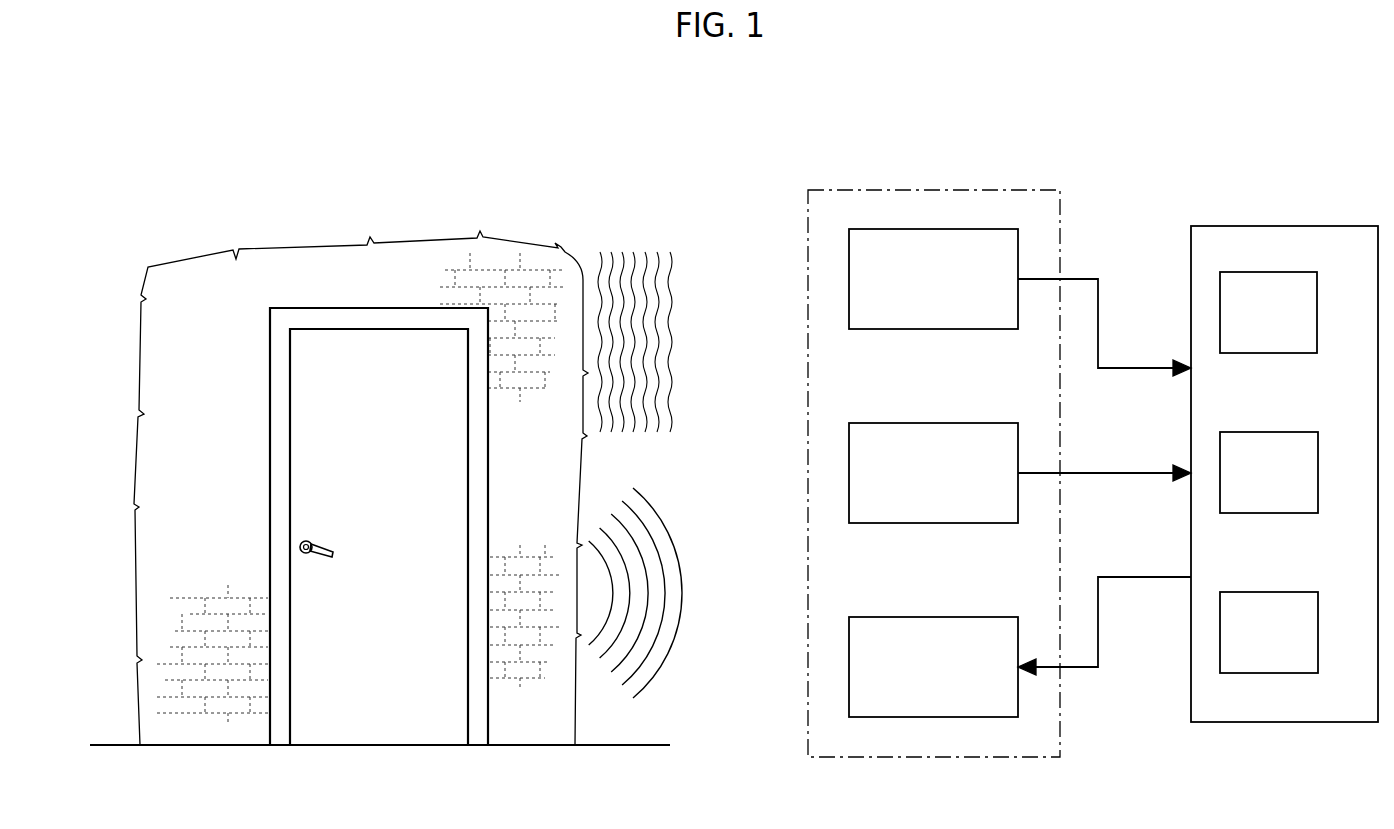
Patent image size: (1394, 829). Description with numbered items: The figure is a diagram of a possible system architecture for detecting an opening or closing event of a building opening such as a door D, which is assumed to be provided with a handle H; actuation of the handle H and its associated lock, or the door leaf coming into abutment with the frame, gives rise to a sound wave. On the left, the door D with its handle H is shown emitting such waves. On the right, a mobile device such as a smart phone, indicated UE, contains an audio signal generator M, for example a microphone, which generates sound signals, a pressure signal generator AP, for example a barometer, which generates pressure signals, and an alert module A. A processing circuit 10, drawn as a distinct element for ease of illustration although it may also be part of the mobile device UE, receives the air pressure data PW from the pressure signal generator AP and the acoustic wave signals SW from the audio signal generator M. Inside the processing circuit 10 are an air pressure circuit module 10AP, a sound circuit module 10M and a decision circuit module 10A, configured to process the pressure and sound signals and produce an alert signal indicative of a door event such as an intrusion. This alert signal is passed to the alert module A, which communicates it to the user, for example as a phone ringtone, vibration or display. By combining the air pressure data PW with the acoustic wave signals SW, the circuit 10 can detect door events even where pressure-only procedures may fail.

The door D is at (406, 292).
The handle H is at (318, 539).
The mobile device UE is at (938, 210).
The pressure signal generator AP is at (920, 330).
The audio signal generator M is at (945, 430).
The alert module A is at (918, 622).
The air pressure data PW is at (1100, 289).
The acoustic wave signals SW is at (1085, 476).
The processing circuit 10 is at (1345, 236).
The air pressure circuit module 10AP is at (1282, 354).
The sound circuit module 10M is at (1272, 440).
The decision circuit module 10A is at (1252, 598).